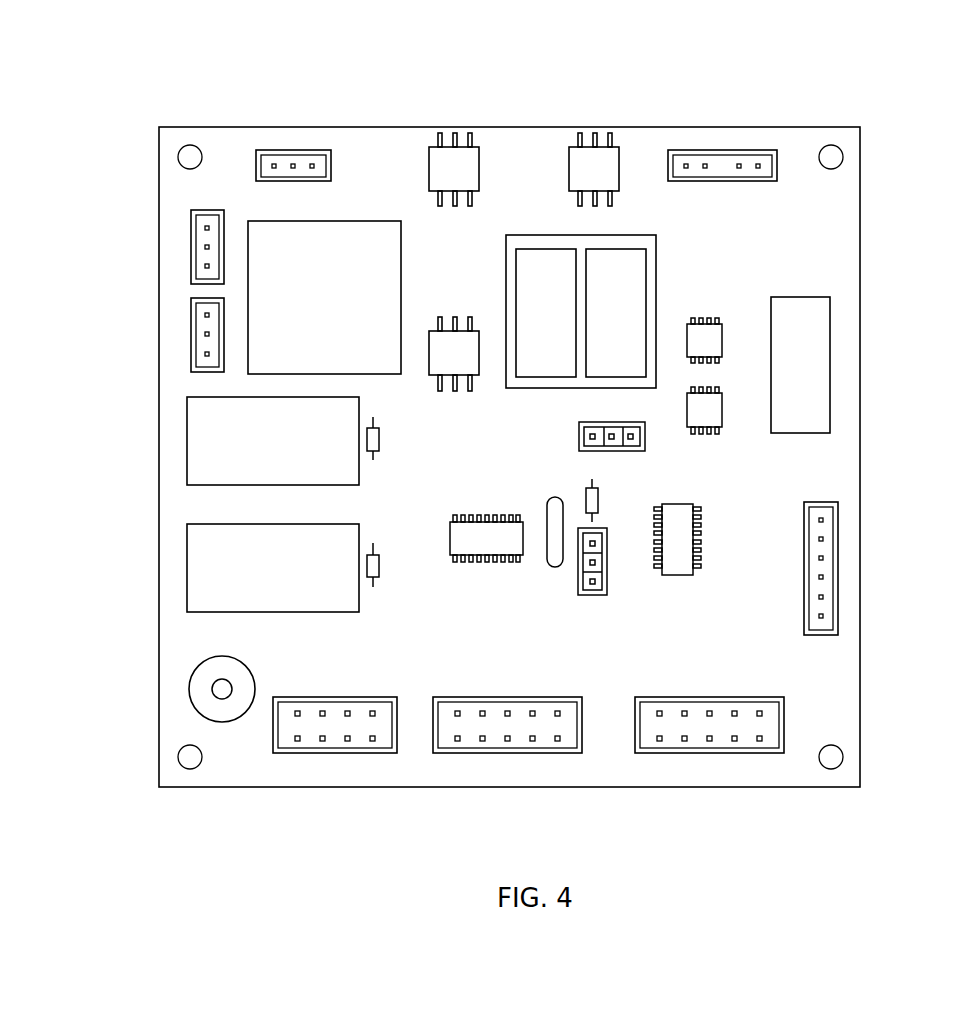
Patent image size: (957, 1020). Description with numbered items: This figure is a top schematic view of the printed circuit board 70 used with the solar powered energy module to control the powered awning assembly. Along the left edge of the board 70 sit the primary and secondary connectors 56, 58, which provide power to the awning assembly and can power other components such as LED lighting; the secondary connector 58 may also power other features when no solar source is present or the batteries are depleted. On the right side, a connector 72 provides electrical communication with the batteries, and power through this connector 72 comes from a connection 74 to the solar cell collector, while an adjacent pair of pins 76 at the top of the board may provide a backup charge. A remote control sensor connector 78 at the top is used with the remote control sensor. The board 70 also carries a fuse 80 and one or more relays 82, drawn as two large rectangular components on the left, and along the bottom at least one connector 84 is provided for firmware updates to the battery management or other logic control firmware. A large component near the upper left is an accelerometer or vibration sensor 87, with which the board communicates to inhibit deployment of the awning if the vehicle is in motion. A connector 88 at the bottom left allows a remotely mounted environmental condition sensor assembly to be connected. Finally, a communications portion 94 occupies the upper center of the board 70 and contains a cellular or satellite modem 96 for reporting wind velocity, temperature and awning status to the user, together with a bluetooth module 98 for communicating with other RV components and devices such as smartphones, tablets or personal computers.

The printed circuit board 70 is at (833, 231).
The connector 72 is at (845, 573).
The connection 74 is at (695, 153).
The adjacent pair of pins 76 is at (748, 153).
The remote control sensor connector 78 is at (293, 147).
The fuse 80 is at (817, 374).
The relay 82 is at (210, 448).
The connector 84 is at (503, 755).
The accelerometer or vibration sensor 87 is at (378, 277).
The connector 88 is at (334, 755).
The communications portion 94 is at (632, 240).
The cellular or satellite modem 96 is at (547, 249).
The bluetooth module 98 is at (646, 283).
The primary connector 56 is at (188, 345).
The secondary connector 58 is at (188, 254).